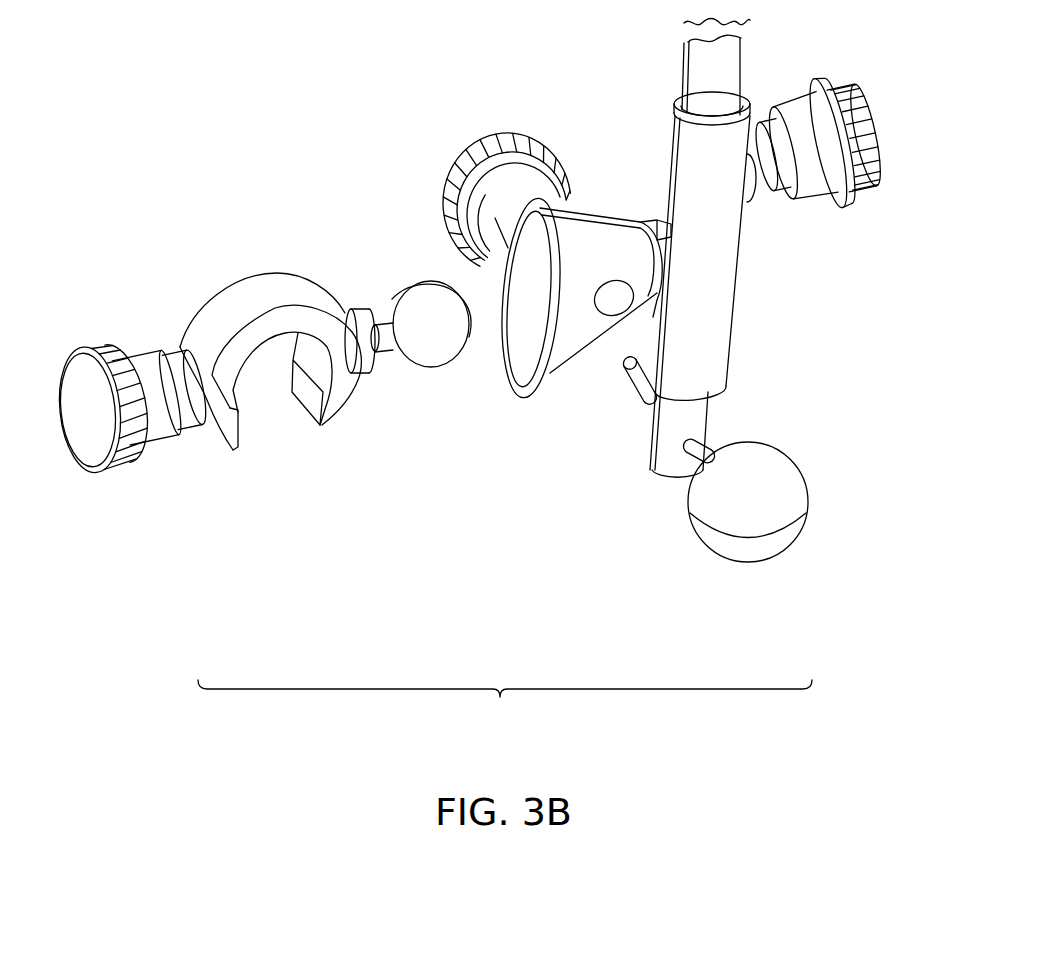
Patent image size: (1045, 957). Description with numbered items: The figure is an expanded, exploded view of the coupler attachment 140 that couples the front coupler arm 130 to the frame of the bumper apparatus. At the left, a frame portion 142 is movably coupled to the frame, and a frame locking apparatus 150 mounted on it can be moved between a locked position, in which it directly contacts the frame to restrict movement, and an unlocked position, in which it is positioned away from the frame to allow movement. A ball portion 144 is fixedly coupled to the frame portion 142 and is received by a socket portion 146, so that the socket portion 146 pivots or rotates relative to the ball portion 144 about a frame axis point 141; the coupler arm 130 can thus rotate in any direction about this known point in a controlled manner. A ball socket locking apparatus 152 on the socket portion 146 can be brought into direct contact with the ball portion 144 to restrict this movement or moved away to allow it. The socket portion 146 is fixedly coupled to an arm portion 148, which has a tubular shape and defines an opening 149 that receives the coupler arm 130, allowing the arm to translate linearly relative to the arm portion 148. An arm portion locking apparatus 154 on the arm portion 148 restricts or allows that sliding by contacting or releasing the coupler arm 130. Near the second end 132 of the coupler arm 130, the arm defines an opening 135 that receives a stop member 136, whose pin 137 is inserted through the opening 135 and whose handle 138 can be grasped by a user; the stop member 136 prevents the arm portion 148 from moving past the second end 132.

The front coupler arm 130 is at (687, 75).
The second end of the coupler arm 132 is at (655, 468).
The opening 135 is at (690, 470).
The stop member 136 is at (664, 548).
The pin 137 is at (636, 374).
The handle 138 is at (775, 458).
The coupler attachment 140 is at (307, 65).
The frame axis point 141 is at (439, 322).
The frame portion 142 is at (271, 276).
The ball portion 144 is at (408, 280).
The socket portion 146 is at (594, 242).
The arm portion 148 is at (752, 242).
The opening 149 is at (740, 92).
The frame locking apparatus 150 is at (69, 354).
The ball socket locking apparatus 152 is at (481, 157).
The arm portion locking apparatus 154 is at (878, 122).